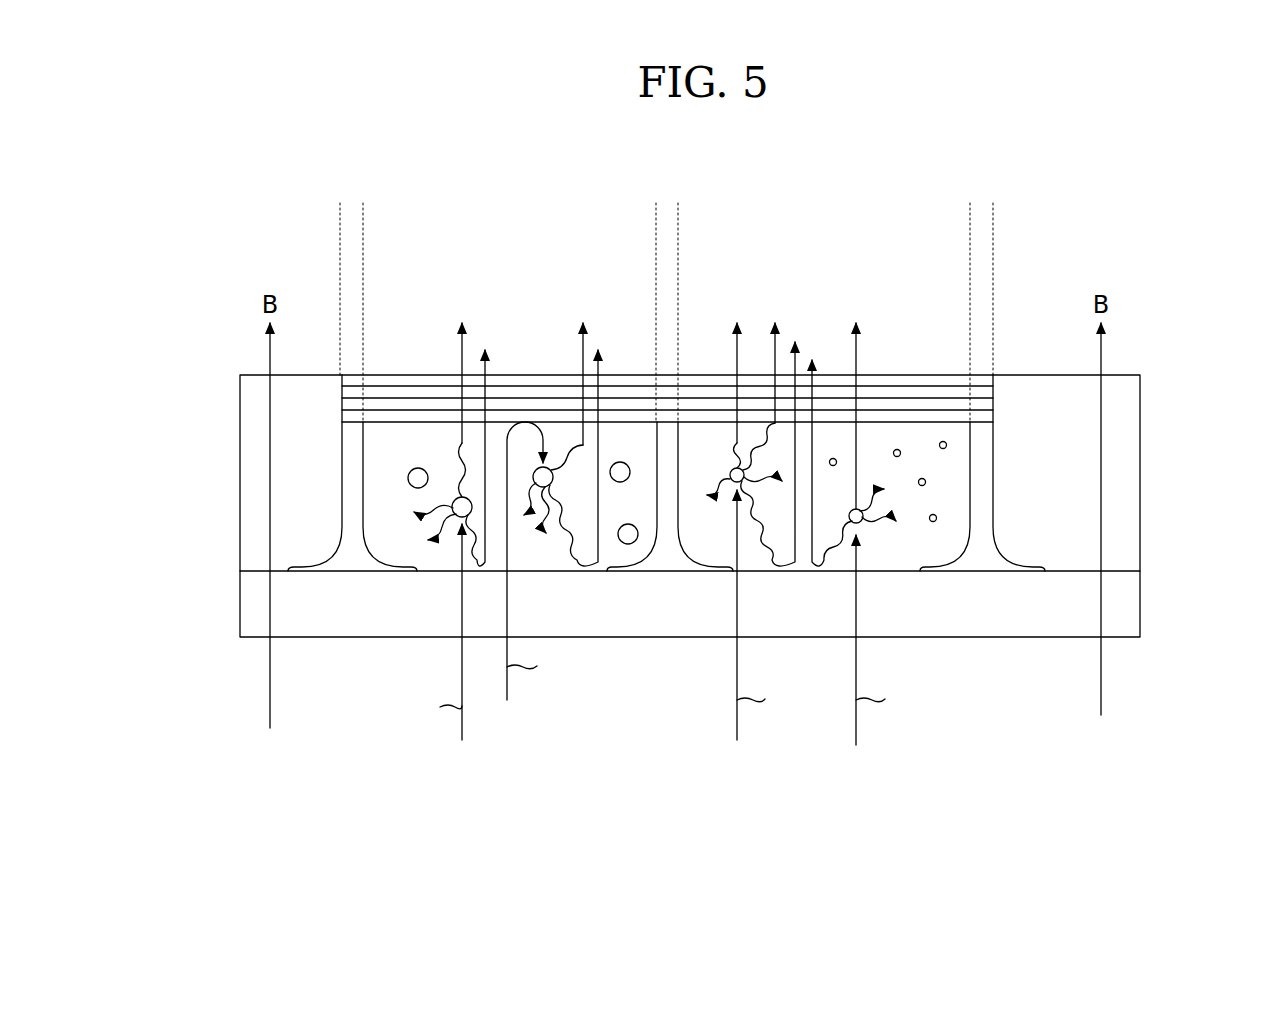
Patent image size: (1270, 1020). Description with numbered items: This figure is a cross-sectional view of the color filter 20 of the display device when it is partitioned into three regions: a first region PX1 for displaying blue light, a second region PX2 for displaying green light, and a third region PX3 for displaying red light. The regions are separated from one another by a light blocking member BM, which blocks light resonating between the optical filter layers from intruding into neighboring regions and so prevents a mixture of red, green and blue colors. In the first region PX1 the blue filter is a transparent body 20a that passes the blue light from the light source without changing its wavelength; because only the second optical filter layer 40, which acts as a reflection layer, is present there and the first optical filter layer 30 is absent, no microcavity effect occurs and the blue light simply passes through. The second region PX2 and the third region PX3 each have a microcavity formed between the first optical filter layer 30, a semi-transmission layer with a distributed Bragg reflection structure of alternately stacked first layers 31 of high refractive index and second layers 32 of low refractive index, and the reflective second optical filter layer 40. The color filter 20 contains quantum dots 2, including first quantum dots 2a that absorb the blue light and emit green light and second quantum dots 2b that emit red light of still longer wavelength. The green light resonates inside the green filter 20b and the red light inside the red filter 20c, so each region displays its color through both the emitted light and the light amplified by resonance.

The quantum dot 2 is at (1160, 797).
The first quantum dot 2a is at (934, 522).
The second quantum dot 2b is at (628, 544).
The color filter 20 is at (1062, 815).
The transparent body 20a is at (248, 489).
The green filter 20b is at (905, 555).
The red filter 20c is at (553, 560).
The first optical filter layer 30 is at (789, 430).
The first layer 31 is at (993, 398).
The second layer 32 is at (993, 386).
The second optical filter layer 40 is at (1140, 600).
The light blocking member BM is at (328, 573).
The first region PX1 is at (240, 223).
The second region PX2 is at (678, 223).
The third region PX3 is at (363, 223).